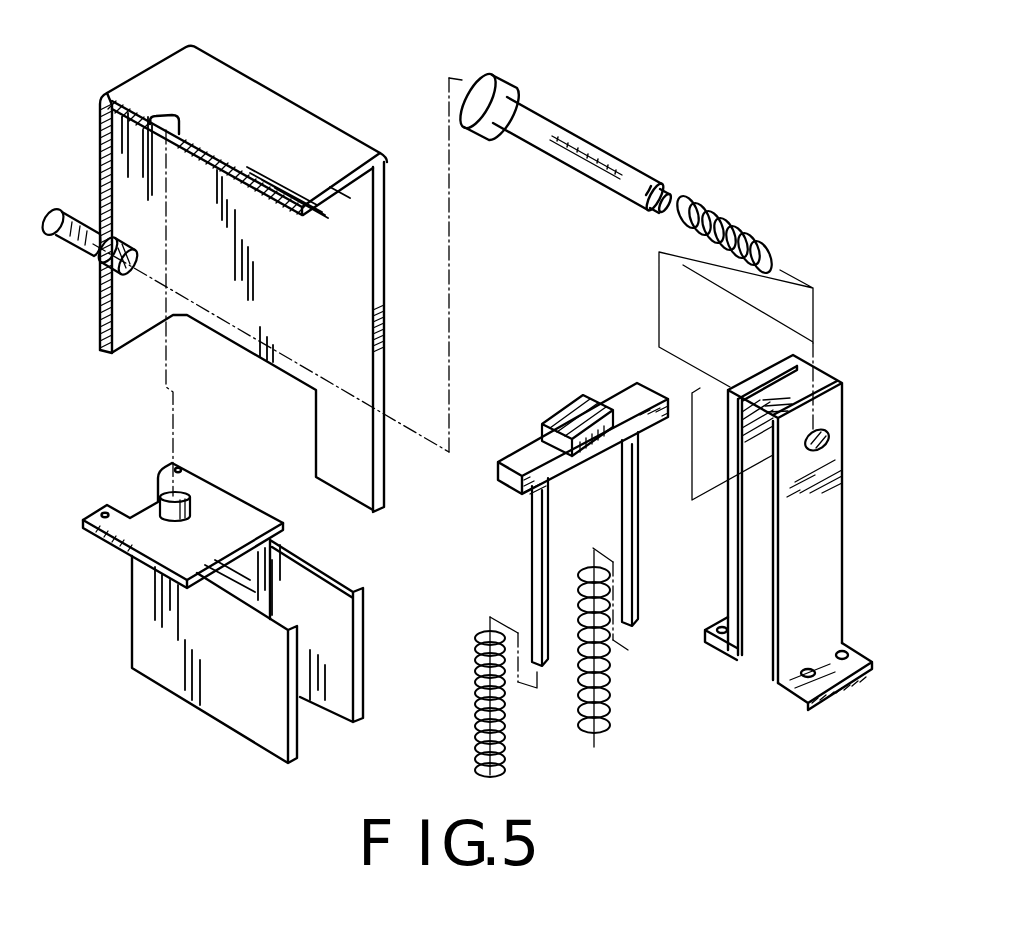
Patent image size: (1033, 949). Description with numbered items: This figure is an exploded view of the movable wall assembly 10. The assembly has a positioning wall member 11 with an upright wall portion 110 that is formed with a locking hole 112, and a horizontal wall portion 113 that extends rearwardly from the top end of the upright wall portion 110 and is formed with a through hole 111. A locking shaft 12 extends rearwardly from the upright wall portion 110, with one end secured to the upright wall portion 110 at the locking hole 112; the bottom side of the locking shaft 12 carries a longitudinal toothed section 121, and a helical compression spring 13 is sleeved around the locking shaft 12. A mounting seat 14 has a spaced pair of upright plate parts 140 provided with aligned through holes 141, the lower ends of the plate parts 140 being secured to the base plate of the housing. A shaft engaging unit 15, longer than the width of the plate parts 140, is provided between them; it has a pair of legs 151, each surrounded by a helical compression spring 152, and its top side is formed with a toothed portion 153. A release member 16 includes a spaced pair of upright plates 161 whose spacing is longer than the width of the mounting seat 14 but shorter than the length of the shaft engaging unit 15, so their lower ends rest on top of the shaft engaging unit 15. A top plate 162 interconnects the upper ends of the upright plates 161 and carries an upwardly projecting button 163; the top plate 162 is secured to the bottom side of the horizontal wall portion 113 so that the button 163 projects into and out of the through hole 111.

The movable wall assembly 10 is at (158, 423).
The positioning wall member 11 is at (303, 120).
The upright wall portion 110 is at (102, 175).
The through hole 111 is at (162, 114).
The locking hole 112 is at (133, 275).
The horizontal wall portion 113 is at (262, 93).
The locking shaft 12 is at (558, 132).
The longitudinal toothed section 121 is at (605, 180).
The helical compression spring 13 is at (735, 218).
The mounting seat 14 is at (730, 563).
The upright plate parts 140 is at (830, 538).
The through holes 141 is at (823, 452).
The shaft engaging unit 15 is at (521, 455).
The legs 151 is at (535, 550).
The helical compression spring 152 is at (478, 633).
The toothed portion 153 is at (583, 397).
The release member 16 is at (335, 562).
The upright plates 161 is at (355, 655).
The top plate 162 is at (255, 512).
The button 163 is at (183, 490).